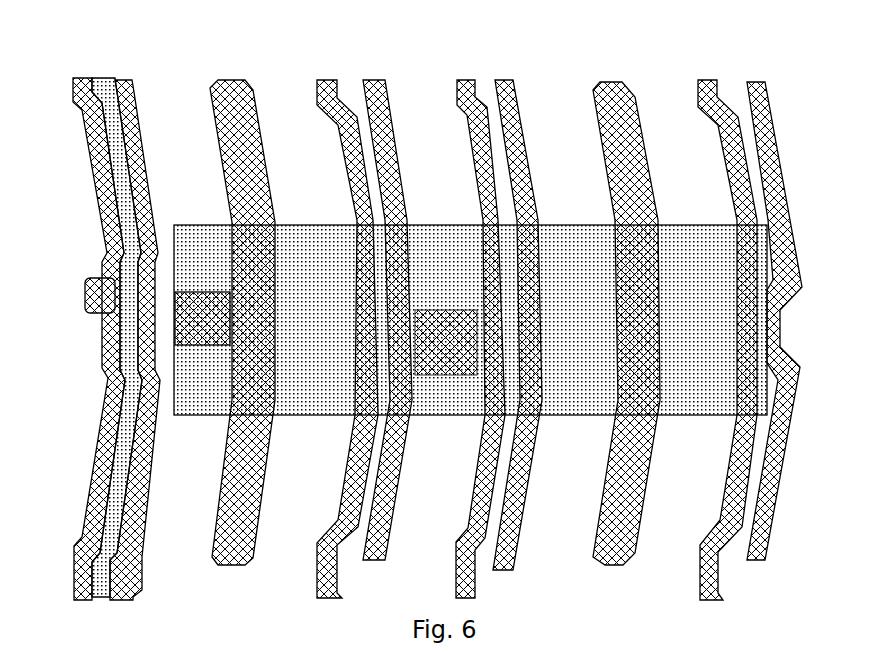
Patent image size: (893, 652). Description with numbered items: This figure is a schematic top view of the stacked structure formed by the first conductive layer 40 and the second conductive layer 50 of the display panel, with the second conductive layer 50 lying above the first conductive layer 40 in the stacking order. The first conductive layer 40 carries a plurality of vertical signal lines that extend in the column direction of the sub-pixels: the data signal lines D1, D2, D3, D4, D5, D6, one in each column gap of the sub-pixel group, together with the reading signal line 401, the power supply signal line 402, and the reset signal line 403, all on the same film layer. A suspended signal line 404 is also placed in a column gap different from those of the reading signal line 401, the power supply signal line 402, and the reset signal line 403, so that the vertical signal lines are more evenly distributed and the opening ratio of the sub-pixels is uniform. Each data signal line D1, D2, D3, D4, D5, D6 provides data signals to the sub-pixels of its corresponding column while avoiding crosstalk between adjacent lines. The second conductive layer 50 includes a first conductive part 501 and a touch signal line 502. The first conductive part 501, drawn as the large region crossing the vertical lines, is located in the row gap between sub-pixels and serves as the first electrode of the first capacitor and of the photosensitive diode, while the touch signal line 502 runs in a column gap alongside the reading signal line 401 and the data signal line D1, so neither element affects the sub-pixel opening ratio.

The first conductive layer 40 is at (444, 311).
The reading signal line 401 is at (75, 86).
The power supply signal line 402 is at (467, 82).
The reset signal line 403 is at (717, 82).
The suspended signal line 404 is at (332, 80).
The data signal line D1 is at (122, 79).
The data signal line D2 is at (227, 90).
The data signal line D3 is at (378, 83).
The data signal line D4 is at (508, 83).
The data signal line D5 is at (610, 90).
The data signal line D6 is at (757, 82).
The second conductive layer 50 is at (432, 337).
The first conductive part 501 is at (685, 240).
The touch signal line 502 is at (120, 161).